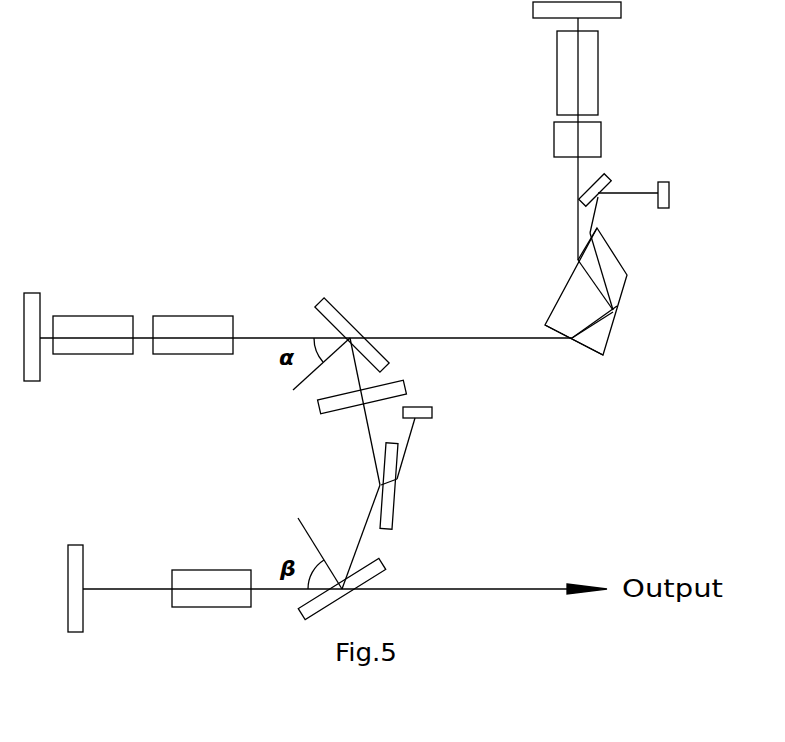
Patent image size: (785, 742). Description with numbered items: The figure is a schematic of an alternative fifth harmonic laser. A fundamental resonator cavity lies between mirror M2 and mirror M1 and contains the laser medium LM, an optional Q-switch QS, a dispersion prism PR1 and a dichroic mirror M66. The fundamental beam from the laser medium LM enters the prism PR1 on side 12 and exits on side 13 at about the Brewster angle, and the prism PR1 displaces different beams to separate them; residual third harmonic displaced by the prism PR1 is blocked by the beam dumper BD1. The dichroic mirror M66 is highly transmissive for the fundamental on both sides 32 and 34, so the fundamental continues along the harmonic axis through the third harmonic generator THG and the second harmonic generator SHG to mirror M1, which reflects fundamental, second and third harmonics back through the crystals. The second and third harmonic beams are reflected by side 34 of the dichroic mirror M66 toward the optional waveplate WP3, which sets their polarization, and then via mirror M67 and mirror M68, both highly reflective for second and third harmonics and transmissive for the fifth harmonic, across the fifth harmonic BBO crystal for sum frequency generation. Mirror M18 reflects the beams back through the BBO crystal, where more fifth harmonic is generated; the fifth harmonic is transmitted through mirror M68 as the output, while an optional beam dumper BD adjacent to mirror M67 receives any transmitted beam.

The side of prism PR1 12 is at (571, 244).
The side of prism PR1 13 is at (565, 345).
The side of dichroic mirror M66 32 is at (461, 325).
The side of dichroic mirror M66 34 is at (195, 325).
The mirror M1 is at (44, 318).
The mirror M2 is at (554, 12).
The laser medium LM is at (552, 73).
The Q-switch QS is at (554, 139).
The beam dumper BD1 is at (653, 182).
The dispersion prism PR1 is at (600, 296).
The second harmonic generator SHG is at (93, 320).
The third harmonic generator THG is at (193, 320).
The dichroic mirror M66 is at (331, 317).
The waveplate WP3 is at (394, 391).
The beam dumper BD is at (434, 441).
The mirror M67 is at (416, 486).
The mirror M68 is at (368, 584).
The mirror M18 is at (96, 569).
The BBO crystal BBO is at (212, 608).